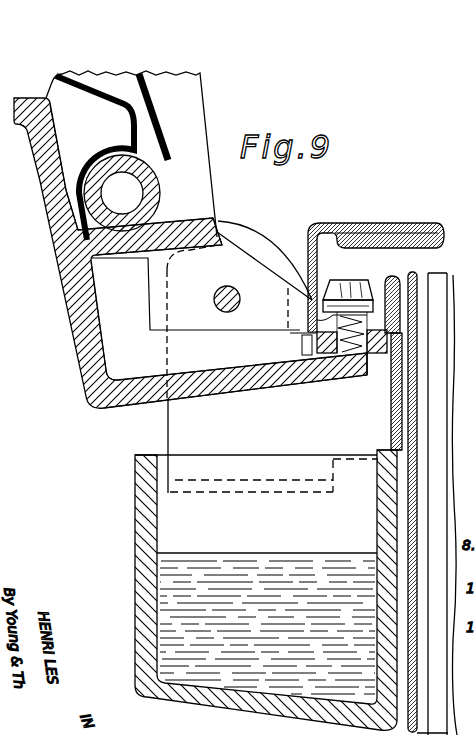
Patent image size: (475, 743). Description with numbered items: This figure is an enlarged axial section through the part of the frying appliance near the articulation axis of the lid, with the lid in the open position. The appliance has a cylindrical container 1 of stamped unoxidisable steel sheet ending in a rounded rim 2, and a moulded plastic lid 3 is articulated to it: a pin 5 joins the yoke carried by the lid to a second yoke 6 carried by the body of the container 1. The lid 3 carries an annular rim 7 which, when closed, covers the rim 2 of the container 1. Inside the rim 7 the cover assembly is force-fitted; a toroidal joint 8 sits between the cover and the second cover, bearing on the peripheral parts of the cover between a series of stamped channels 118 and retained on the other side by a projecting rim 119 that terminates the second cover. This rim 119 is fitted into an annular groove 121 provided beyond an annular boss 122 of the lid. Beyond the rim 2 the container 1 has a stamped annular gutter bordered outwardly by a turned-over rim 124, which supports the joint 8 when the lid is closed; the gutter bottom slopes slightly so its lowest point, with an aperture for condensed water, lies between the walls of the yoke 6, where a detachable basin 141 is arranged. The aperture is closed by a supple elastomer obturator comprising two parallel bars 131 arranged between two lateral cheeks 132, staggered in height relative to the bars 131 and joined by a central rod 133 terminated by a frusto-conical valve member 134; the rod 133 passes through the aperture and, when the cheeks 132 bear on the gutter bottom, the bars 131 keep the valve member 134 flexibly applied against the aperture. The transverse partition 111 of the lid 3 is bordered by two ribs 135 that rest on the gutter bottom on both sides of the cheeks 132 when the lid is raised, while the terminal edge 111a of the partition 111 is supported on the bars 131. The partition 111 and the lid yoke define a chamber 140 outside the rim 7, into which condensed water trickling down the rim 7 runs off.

The container 1 is at (413, 404).
The rounded rim 2 is at (389, 278).
The lid 3 is at (74, 411).
The pin 5 is at (234, 290).
The second yoke 6 is at (182, 428).
The annular rim 7 is at (218, 222).
The toroidal joint 8 is at (160, 192).
The transverse partition 111 is at (225, 381).
The terminal edge 111a is at (356, 374).
The channels 118 is at (160, 121).
The projecting rim 119 is at (82, 224).
The annular groove 121 is at (63, 267).
The annular boss 122 is at (107, 258).
The turned-over rim 124 is at (351, 232).
The parallel bars 131 is at (380, 352).
The lateral cheeks 132 is at (301, 346).
The central rod 133 is at (367, 318).
The frusto-conical valve member 134 is at (343, 285).
The ribs 135 is at (147, 331).
The chamber 140 is at (113, 327).
The basin 141 is at (233, 698).